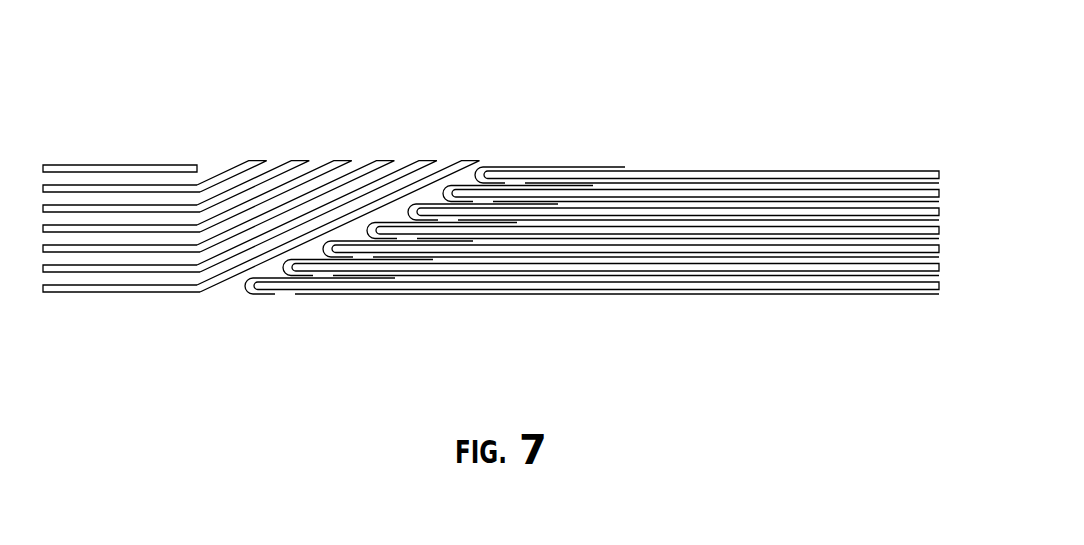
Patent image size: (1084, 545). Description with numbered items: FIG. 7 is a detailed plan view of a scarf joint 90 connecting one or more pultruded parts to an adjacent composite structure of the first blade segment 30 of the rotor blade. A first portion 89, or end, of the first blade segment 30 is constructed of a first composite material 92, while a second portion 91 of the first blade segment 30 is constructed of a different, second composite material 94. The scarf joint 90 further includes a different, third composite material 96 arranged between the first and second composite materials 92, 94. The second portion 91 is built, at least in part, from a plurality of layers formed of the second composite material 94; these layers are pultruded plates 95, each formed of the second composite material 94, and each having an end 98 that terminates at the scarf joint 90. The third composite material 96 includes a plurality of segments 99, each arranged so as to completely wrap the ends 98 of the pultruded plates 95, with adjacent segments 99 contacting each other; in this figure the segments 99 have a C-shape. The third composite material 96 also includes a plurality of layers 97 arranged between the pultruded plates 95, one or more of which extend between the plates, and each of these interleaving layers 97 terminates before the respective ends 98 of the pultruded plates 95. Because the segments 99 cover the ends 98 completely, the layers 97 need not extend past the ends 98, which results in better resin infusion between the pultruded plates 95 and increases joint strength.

The first blade segment 30 is at (501, 175).
The first portion 89 is at (121, 182).
The scarf joint 90 is at (338, 190).
The second portion 91 is at (553, 213).
The first composite material 92 is at (281, 167).
The second composite material 94 is at (753, 192).
The pultruded plates 95 is at (691, 161).
The third composite material 96 is at (707, 134).
The layers of third composite material 97 is at (870, 182).
The ends of the layers 98 is at (255, 285).
The segments 99 is at (270, 273).